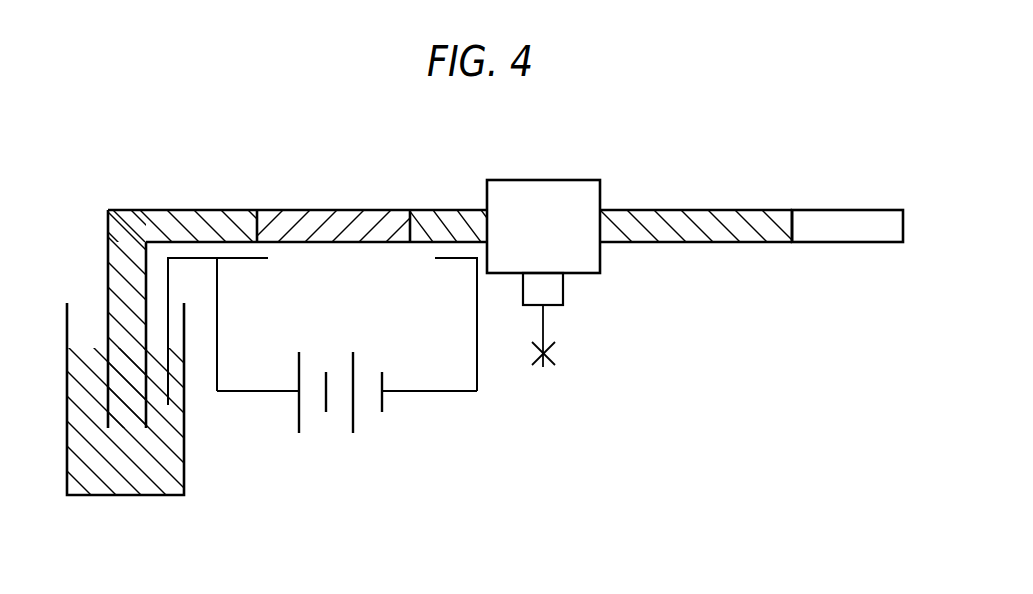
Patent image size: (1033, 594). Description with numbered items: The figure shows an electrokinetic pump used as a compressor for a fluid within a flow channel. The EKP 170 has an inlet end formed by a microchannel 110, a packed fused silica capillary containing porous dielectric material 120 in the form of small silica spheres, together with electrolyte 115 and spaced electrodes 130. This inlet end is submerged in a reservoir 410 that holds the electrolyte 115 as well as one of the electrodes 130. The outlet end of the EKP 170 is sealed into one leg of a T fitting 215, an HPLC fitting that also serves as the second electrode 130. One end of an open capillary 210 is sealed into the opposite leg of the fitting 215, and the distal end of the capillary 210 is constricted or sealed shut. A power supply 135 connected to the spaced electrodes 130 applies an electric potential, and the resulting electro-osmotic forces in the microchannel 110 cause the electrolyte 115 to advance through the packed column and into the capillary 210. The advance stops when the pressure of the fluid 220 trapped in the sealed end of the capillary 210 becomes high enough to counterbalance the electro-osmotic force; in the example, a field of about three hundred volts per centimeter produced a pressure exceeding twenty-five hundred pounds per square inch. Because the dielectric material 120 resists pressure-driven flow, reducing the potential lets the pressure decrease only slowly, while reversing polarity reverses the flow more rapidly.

The microchannel 110 is at (108, 265).
The electrolyte 115 is at (164, 218).
The porous dielectric material 120 is at (320, 218).
The spaced electrodes 130 is at (268, 259).
The power supply 135 is at (354, 418).
The EKP 170 is at (695, 314).
The capillary 210 is at (676, 210).
The T fitting 215 is at (553, 179).
The fluid 220 is at (828, 210).
The reservoir 410 is at (185, 475).